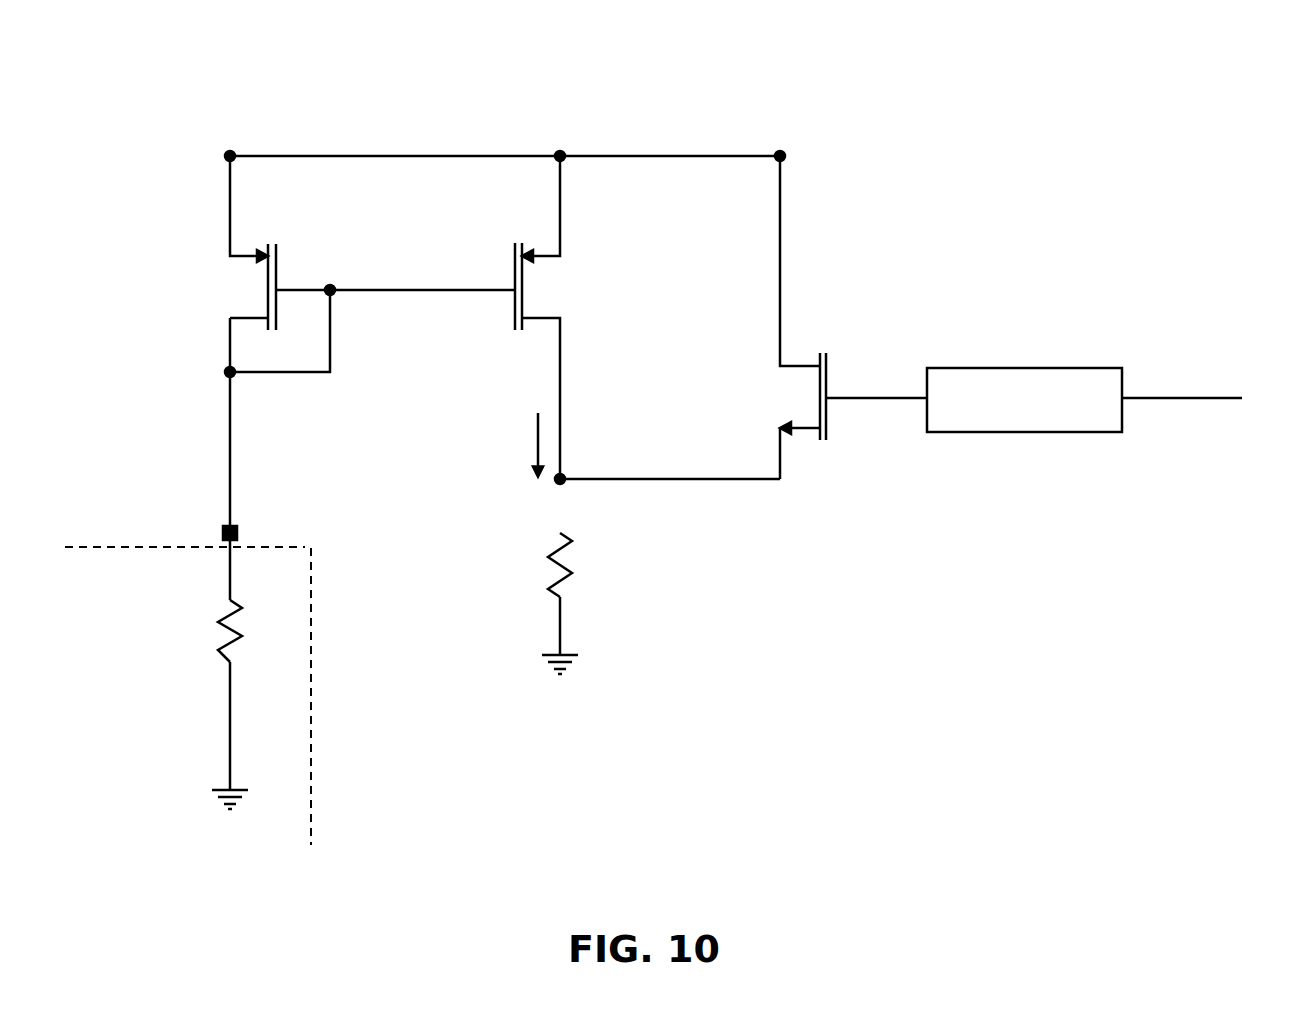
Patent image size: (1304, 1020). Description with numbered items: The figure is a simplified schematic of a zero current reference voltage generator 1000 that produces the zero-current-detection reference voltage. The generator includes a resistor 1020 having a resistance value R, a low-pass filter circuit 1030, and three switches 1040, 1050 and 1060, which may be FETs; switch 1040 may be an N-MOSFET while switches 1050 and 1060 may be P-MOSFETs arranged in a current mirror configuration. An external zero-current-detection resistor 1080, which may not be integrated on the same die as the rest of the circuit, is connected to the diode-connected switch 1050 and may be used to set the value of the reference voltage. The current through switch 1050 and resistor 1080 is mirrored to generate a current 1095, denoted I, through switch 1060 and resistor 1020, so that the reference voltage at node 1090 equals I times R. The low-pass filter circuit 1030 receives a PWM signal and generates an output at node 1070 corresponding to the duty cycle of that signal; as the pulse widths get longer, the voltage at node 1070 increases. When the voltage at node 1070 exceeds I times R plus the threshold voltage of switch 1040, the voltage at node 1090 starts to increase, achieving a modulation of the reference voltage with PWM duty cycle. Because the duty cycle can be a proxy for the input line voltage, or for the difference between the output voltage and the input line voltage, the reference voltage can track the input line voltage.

The zero current reference voltage generator 1000 is at (100, 92).
The switch 1050 is at (285, 244).
The switch 1060 is at (505, 244).
The switch 1040 is at (812, 343).
The low-pass filter circuit 1030 is at (1003, 367).
The node 1070 is at (863, 402).
The node 1090 is at (707, 482).
The current 1095 is at (534, 462).
The resistor 1020 is at (571, 556).
The resistor 1080 is at (225, 656).